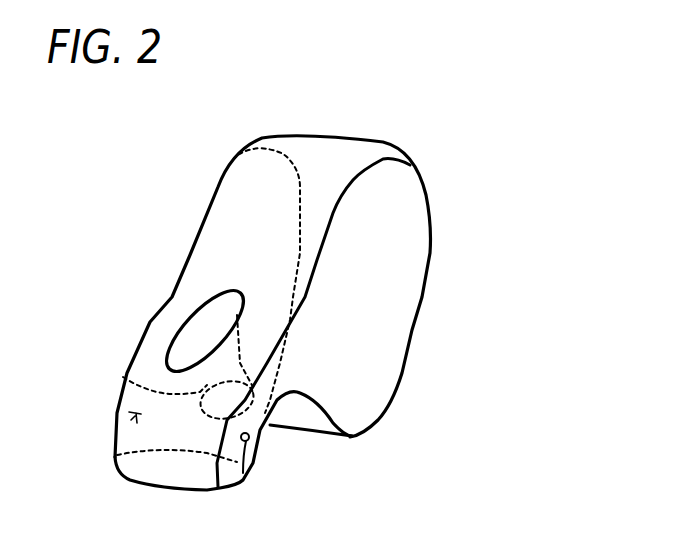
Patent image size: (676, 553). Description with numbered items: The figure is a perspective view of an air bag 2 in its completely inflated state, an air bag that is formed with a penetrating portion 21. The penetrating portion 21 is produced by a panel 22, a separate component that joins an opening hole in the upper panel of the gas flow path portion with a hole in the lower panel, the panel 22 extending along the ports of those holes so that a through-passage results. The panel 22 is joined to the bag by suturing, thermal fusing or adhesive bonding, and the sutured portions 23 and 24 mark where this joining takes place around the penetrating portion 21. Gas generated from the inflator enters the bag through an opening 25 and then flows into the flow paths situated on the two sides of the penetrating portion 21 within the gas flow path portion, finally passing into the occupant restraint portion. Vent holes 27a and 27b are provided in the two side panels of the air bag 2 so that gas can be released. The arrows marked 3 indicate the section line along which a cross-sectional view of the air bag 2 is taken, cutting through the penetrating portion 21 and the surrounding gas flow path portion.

The air bag 2 is at (443, 197).
The section line 3— 3 is at (150, 313).
The penetrating portion 21 is at (207, 320).
The panel 22 is at (123, 377).
The sutured portion 23 is at (217, 318).
The sutured portion 24 is at (262, 430).
The opening 25 is at (175, 467).
The vent hole 27a is at (117, 413).
The vent hole 27b is at (238, 478).